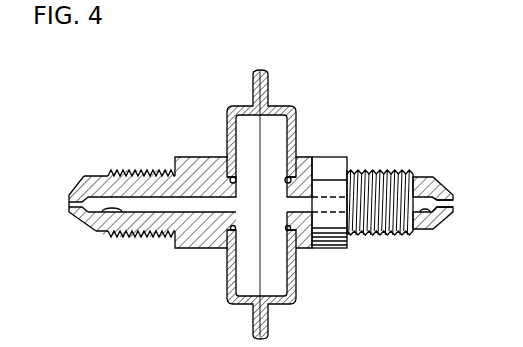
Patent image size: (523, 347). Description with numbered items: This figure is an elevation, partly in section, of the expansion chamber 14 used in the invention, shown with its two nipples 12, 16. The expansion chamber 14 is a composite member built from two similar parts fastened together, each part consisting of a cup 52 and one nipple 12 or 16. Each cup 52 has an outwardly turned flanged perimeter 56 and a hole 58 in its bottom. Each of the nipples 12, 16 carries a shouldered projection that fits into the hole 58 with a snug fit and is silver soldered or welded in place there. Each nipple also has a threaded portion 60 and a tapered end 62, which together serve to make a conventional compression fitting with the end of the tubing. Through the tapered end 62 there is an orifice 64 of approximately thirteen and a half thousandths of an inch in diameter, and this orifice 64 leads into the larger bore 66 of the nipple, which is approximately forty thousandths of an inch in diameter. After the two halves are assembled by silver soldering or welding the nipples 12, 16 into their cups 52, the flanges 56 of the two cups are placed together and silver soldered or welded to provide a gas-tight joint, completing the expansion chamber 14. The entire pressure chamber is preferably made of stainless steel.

The nipple 12 is at (193, 156).
The expansion chamber 14 is at (269, 204).
The nipple 16 is at (327, 157).
The cup 52 is at (228, 286).
The outwardly turned flanged perimeter 56 is at (253, 95).
The hole 58 is at (237, 180).
The threaded portion 60 is at (141, 172).
The tapered end 62 is at (79, 183).
The orifice 64 is at (70, 203).
The bore 66 is at (95, 229).